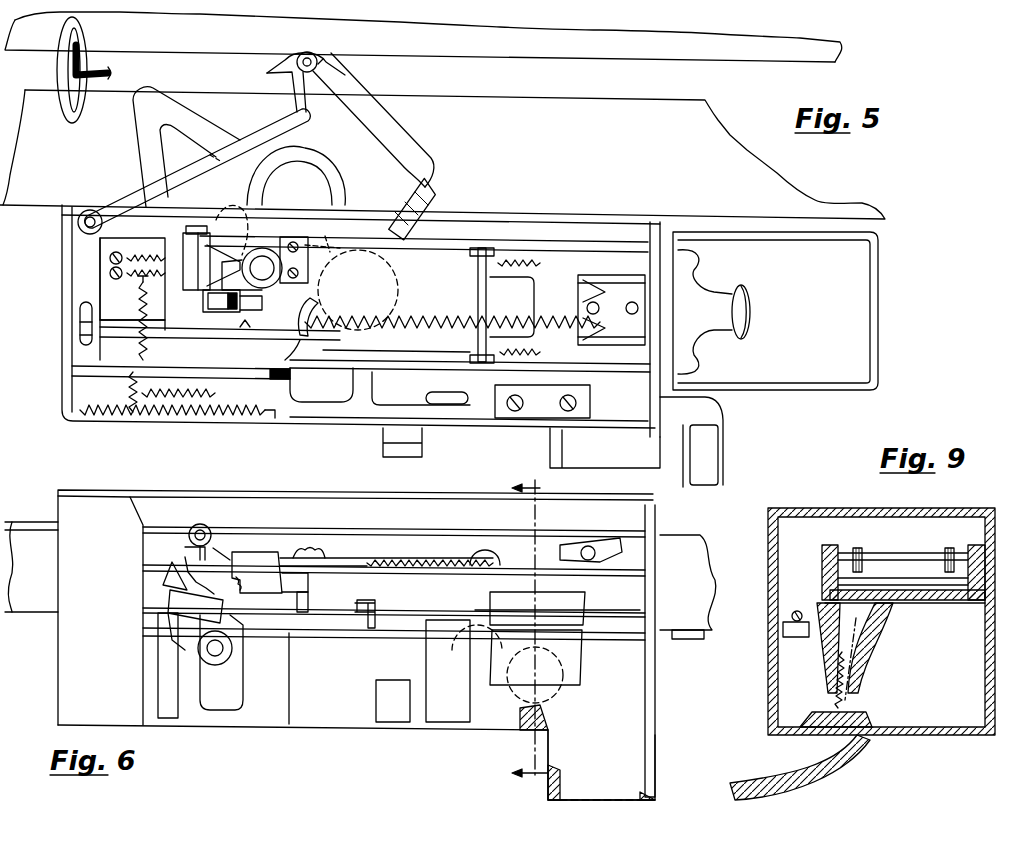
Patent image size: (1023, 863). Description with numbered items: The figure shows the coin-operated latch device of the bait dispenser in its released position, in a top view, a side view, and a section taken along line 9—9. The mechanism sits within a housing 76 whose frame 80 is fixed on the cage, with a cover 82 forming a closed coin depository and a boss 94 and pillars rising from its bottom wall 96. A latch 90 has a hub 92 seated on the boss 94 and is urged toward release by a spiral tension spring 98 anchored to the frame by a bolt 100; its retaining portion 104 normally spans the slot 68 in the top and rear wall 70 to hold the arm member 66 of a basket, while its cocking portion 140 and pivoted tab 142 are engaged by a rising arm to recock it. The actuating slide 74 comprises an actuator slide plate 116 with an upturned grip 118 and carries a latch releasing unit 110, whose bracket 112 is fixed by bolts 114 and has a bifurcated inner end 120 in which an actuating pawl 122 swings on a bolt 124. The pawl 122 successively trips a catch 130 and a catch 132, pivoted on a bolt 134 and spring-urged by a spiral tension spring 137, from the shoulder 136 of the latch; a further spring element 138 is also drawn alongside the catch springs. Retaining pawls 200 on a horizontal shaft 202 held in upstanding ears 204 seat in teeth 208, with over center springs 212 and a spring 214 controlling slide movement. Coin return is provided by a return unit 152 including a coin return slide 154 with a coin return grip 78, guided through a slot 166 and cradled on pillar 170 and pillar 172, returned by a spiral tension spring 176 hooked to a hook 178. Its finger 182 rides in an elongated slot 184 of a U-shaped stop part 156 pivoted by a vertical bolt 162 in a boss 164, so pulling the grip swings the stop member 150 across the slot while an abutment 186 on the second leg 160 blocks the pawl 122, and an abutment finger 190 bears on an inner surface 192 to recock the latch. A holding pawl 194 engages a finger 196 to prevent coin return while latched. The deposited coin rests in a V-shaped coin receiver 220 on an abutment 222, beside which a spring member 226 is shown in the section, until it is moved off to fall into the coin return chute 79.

In FIG. 5, the arm member 66 is at (60, 40).
In FIG. 5, the slot 68 is at (670, 92).
In FIG. 6, the slot 68 is at (31, 567).
In FIG. 5, the top and rear wall 70 is at (830, 56).
In FIG. 5, the actuating slide 74 is at (775, 311).
In FIG. 6, the housing 76 is at (322, 712).
In FIG. 5, the coin return grip 78 is at (722, 452).
In FIG. 6, the coin return grip 78 is at (694, 624).
In FIG. 5, the coin return chute 79 is at (565, 461).
In FIG. 6, the coin return chute 79 is at (660, 770).
In FIG. 9, the coin return chute 79 is at (800, 785).
In FIG. 5, the frame 80 is at (60, 420).
In FIG. 6, the frame 80 is at (356, 645).
In FIG. 9, the frame 80 is at (945, 745).
In FIG. 9, the cover 82 is at (768, 540).
In FIG. 5, the latch 90 is at (166, 137).
In FIG. 5, the hub 92 is at (296, 322).
In FIG. 6, the boss 94 is at (285, 672).
In FIG. 6, the bottom wall 96 is at (262, 728).
In FIG. 5, the spiral tension spring 98 is at (130, 368).
In FIG. 5, the bolt 100 is at (80, 424).
In FIG. 5, the retaining portion 104 is at (176, 106).
In FIG. 5, the latch releasing unit 110 is at (290, 236).
In FIG. 5, the bracket 112 is at (243, 256).
In FIG. 5, the bolts 114 is at (296, 240).
In FIG. 5, the actuator slide plate 116 is at (380, 370).
In FIG. 9, the actuator slide plate 116 is at (870, 580).
In FIG. 5, the upturned grip 118 is at (735, 287).
In FIG. 5, the bifurcated inner end 120 is at (203, 226).
In FIG. 6, the bifurcated inner end 120 is at (215, 545).
In FIG. 5, the actuating pawl 122 is at (214, 248).
In FIG. 6, the actuating pawl 122 is at (182, 560).
In FIG. 5, the bolt 124 is at (220, 212).
In FIG. 6, the bolt 124 is at (203, 524).
In FIG. 5, the catch 130 is at (183, 282).
In FIG. 6, the catch 130 is at (165, 593).
In FIG. 5, the catch 132 is at (205, 303).
In FIG. 6, the catch 132 is at (165, 578).
In FIG. 6, the bolt 134 is at (212, 665).
In FIG. 5, the shoulder 136 is at (250, 304).
In FIG. 5, the spiral tension spring 137 is at (140, 283).
In FIG. 6, the spiral tension spring 137 is at (158, 653).
In FIG. 5, the compression springs 138 is at (143, 254).
In FIG. 5, the cocking portion 140 is at (292, 81).
In FIG. 5, the pivoted tab 142 is at (297, 57).
In FIG. 5, the stop member 150 is at (236, 146).
In FIG. 5, the return unit 152 is at (690, 406).
In FIG. 5, the coin return slide 154 is at (250, 337).
In FIG. 6, the coin return slide 154 is at (620, 635).
In FIG. 9, the coin return slide 154 is at (783, 630).
In FIG. 5, the stop part 156 is at (85, 255).
In FIG. 5, the second leg 160 is at (208, 366).
In FIG. 6, the second leg 160 is at (256, 552).
In FIG. 5, the vertical bolt 162 is at (93, 210).
In FIG. 5, the boss 164 is at (108, 260).
In FIG. 6, the slot 166 is at (648, 642).
In FIG. 5, the pillar 170 is at (155, 340).
In FIG. 5, the pillar 172 is at (462, 390).
In FIG. 6, the pillar 172 is at (424, 664).
In FIG. 5, the spiral tension spring 176 is at (172, 418).
In FIG. 5, the hook 178 is at (266, 418).
In FIG. 5, the finger 182 is at (80, 322).
In FIG. 5, the elongated slot 184 is at (80, 340).
In FIG. 5, the abutment 186 is at (321, 385).
In FIG. 6, the abutment 186 is at (296, 548).
In FIG. 5, the abutment finger 190 is at (346, 200).
In FIG. 5, the inner surface 192 is at (333, 134).
In FIG. 5, the holding pawl 194 is at (446, 186).
In FIG. 5, the finger 196 is at (382, 300).
In FIG. 5, the retaining pawls 200 is at (495, 350).
In FIG. 6, the retaining pawls 200 is at (470, 555).
In FIG. 9, the retaining pawls 200 is at (857, 548).
In FIG. 5, the horizontal shaft 202 is at (478, 298).
In FIG. 9, the horizontal shaft 202 is at (905, 552).
In FIG. 5, the upstanding ears 204 is at (490, 248).
In FIG. 6, the teeth 208 is at (370, 558).
In FIG. 5, the over center springs 212 is at (540, 262).
In FIG. 5, the spring 214 is at (415, 322).
In FIG. 5, the coin receiver 220 is at (528, 418).
In FIG. 6, the coin receiver 220 is at (490, 680).
In FIG. 9, the coin receiver 220 is at (880, 612).
In FIG. 6, the abutment 222 is at (525, 735).
In FIG. 9, the abutment 222 is at (815, 710).
In FIG. 6, the spring 226 is at (565, 688).
In FIG. 9, the spring 226 is at (850, 665).
In FIG. 6, the section line 9 is at (557, 630).